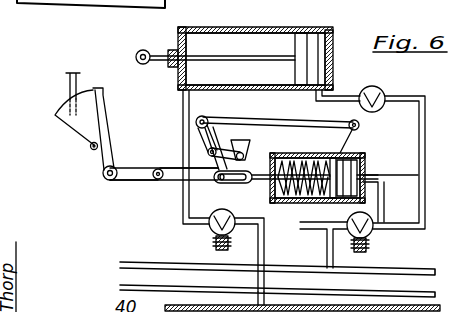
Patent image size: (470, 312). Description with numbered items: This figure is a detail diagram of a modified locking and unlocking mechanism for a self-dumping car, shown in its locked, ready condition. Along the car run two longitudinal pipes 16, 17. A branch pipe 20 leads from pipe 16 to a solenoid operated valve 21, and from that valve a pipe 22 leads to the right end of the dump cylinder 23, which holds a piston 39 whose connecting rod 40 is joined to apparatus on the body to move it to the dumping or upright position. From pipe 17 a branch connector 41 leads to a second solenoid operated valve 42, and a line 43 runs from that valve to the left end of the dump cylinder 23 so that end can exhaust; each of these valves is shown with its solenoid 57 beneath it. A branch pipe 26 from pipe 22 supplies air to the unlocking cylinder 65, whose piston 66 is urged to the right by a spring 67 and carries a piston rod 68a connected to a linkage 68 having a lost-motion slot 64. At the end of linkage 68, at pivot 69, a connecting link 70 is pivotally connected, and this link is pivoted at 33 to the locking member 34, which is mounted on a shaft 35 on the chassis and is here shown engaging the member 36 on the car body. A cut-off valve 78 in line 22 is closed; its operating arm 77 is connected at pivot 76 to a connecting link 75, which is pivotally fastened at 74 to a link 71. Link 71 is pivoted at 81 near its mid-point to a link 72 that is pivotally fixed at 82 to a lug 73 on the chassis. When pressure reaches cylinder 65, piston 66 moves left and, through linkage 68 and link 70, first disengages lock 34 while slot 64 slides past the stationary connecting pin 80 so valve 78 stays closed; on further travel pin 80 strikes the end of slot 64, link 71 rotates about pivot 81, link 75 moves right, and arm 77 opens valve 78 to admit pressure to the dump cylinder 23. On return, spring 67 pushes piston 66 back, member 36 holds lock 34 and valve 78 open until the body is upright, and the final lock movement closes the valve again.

The longitudinal pipe 16 is at (122, 262).
The longitudinal pipe 17 is at (123, 285).
The branch pipe 20 is at (327, 232).
The solenoid operated valve 21 is at (378, 198).
The pipe 22 is at (341, 94).
The dump cylinder 23 is at (315, 28).
The branch pipe 26 is at (384, 162).
The pivot 33 is at (103, 176).
The locking member 34 is at (96, 90).
The shaft 35 is at (90, 146).
The member 36 is at (68, 86).
The piston 39 is at (286, 44).
The connecting rod 40 is at (156, 50).
The branch connector 41 is at (272, 263).
The solenoid operated valve 42 is at (236, 232).
The line 43 is at (182, 111).
The solenoid 57 is at (213, 246).
The slot 64 is at (241, 184).
The cylinder 65 is at (283, 203).
The piston 66 is at (340, 202).
The spring 67 is at (313, 158).
The linkage 68 is at (183, 196).
The piston rod 68a is at (300, 175).
The pivot 69 is at (157, 182).
The connecting link 70 is at (128, 181).
The link 71 is at (195, 131).
The link 72 is at (222, 125).
The lug 73 is at (248, 140).
The pivot 74 is at (210, 112).
The connecting link 75 is at (311, 118).
The pivot 76 is at (361, 131).
The operating arm 77 is at (362, 126).
The cut-off valve 78 is at (383, 87).
The connecting pin 80 is at (219, 183).
The pivot 81 is at (205, 151).
The pivot 82 is at (243, 158).